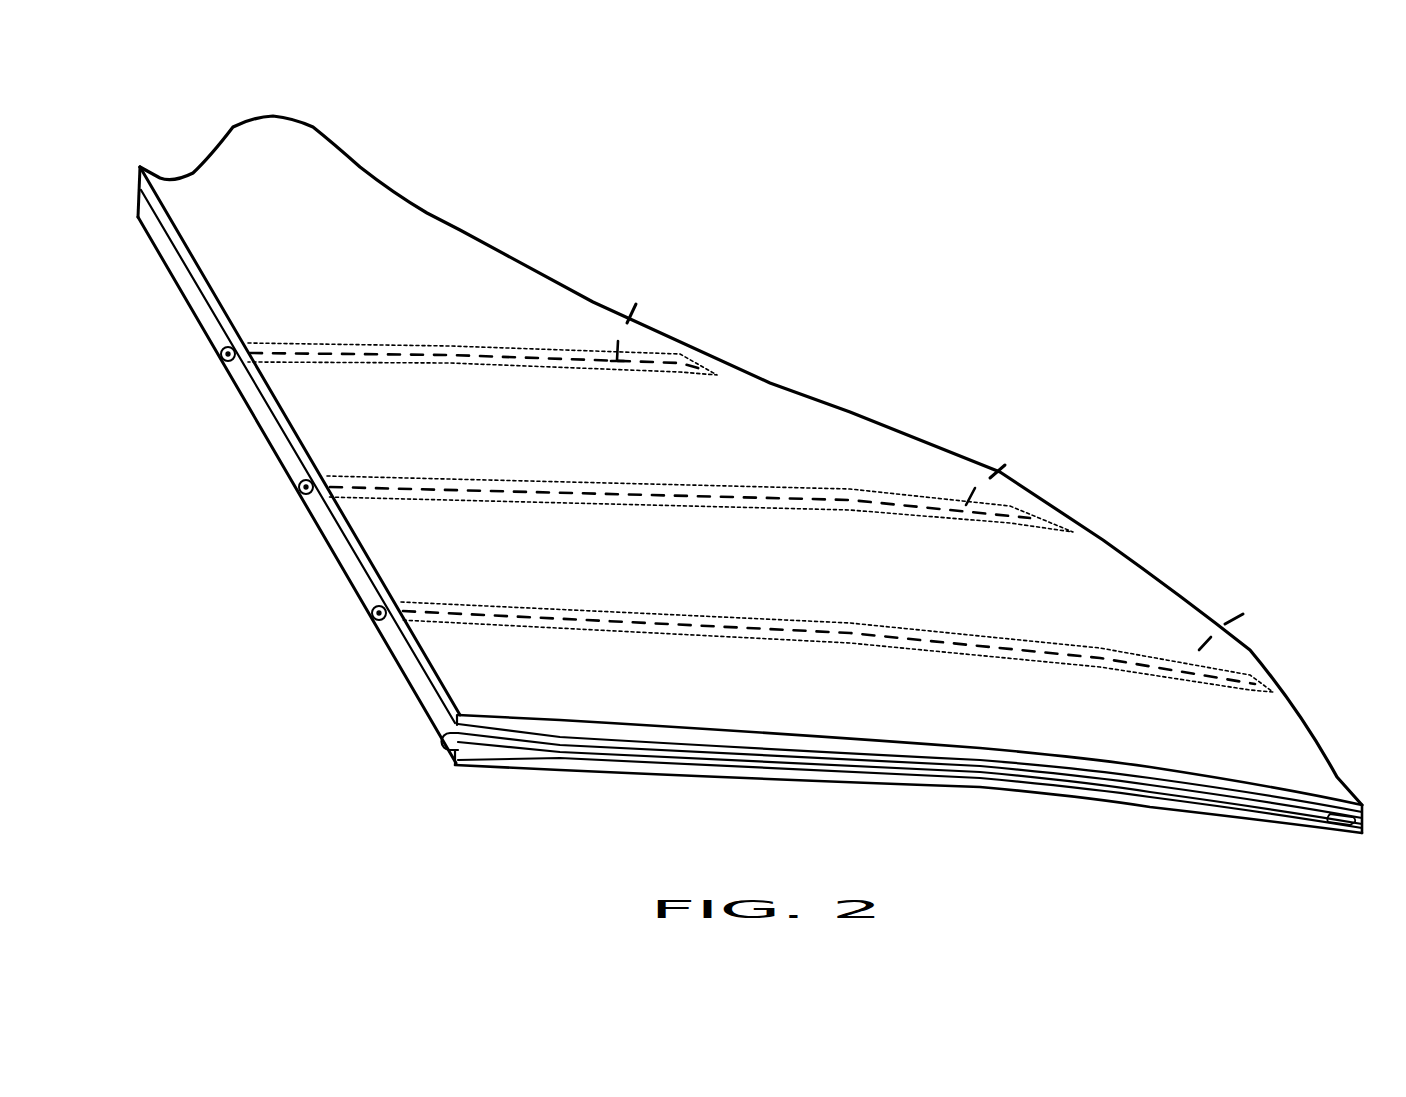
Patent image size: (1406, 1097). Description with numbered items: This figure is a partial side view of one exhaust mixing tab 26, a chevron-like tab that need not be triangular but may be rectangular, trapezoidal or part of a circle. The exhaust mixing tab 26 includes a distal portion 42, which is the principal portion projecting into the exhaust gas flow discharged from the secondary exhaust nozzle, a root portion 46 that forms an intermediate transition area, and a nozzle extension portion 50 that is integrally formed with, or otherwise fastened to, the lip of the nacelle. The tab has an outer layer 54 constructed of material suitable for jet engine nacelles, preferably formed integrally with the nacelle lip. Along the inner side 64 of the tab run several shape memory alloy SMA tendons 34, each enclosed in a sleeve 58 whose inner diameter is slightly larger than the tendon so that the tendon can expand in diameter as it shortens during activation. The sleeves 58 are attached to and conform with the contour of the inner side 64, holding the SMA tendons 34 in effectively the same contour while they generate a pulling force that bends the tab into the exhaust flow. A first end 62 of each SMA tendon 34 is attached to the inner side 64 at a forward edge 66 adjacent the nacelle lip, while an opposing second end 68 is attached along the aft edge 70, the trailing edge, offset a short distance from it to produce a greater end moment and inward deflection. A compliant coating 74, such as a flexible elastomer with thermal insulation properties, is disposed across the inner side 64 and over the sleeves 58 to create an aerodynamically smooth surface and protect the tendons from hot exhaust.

The exhaust mixing tab 26 is at (502, 198).
The SMA tendon 34 is at (218, 353).
The distal portion 42 is at (1075, 590).
The root portion 46 is at (673, 448).
The nozzle extension portion 50 is at (252, 185).
The outer layer 54 is at (142, 187).
The sleeve 58 is at (582, 345).
The first end 62 is at (465, 747).
The inner side 64 is at (427, 683).
The forward edge 66 is at (453, 693).
The second end 68 is at (1313, 823).
The aft edge 70 is at (1147, 565).
The compliant coating 74 is at (167, 254).